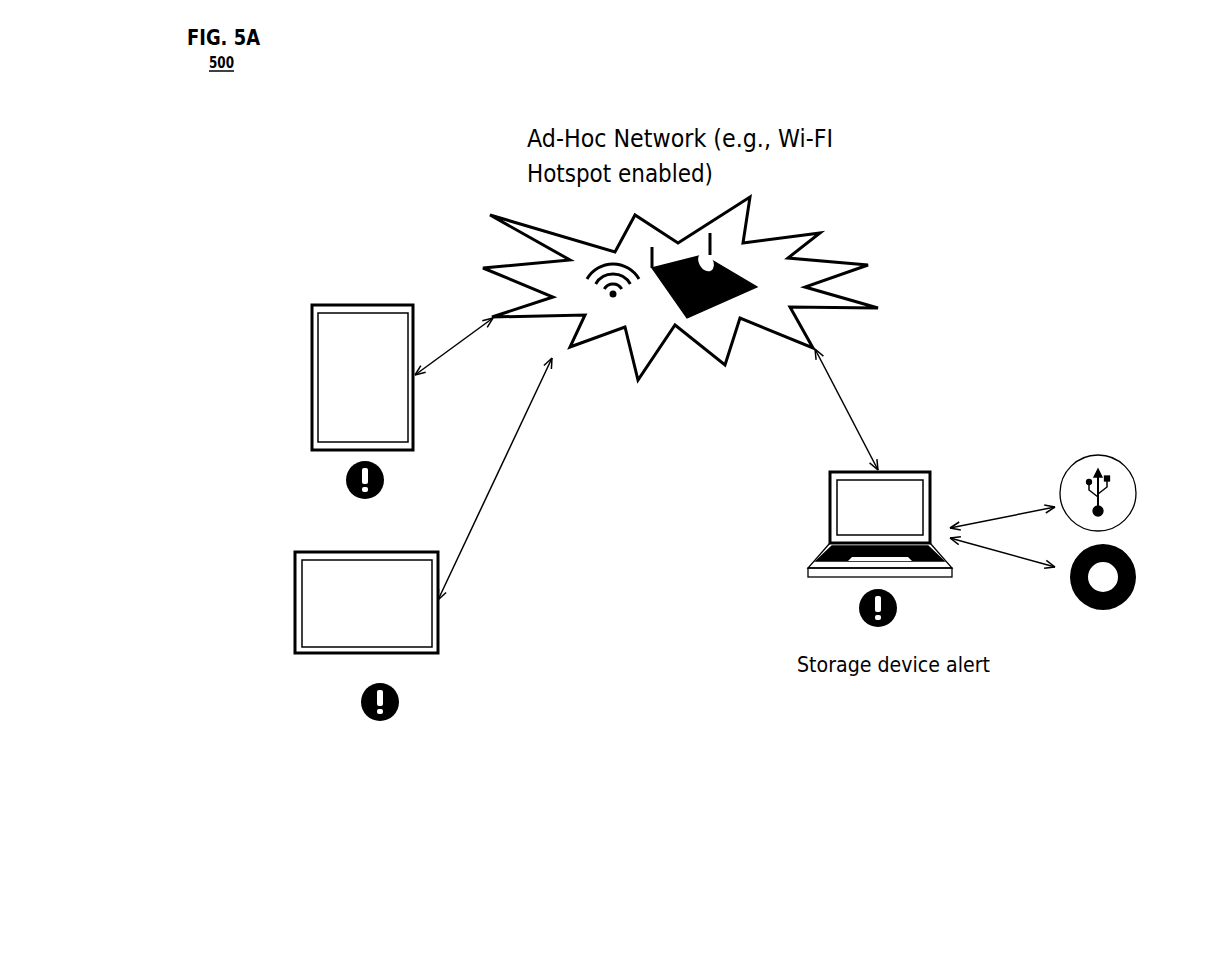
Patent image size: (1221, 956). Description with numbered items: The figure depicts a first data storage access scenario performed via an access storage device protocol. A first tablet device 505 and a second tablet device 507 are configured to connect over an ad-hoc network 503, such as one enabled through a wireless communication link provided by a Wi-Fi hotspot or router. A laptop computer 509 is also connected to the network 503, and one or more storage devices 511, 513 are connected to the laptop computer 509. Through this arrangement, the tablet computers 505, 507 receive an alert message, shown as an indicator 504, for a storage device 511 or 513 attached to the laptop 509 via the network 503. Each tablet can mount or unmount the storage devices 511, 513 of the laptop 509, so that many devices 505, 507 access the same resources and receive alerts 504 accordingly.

The ad-hoc network 503 is at (848, 253).
The indicator 504 is at (335, 483).
The first tablet device 505 is at (363, 302).
The second tablet device 507 is at (445, 633).
The laptop computer 509 is at (902, 468).
The storage device 511 is at (1143, 485).
The storage device 513 is at (1145, 582).